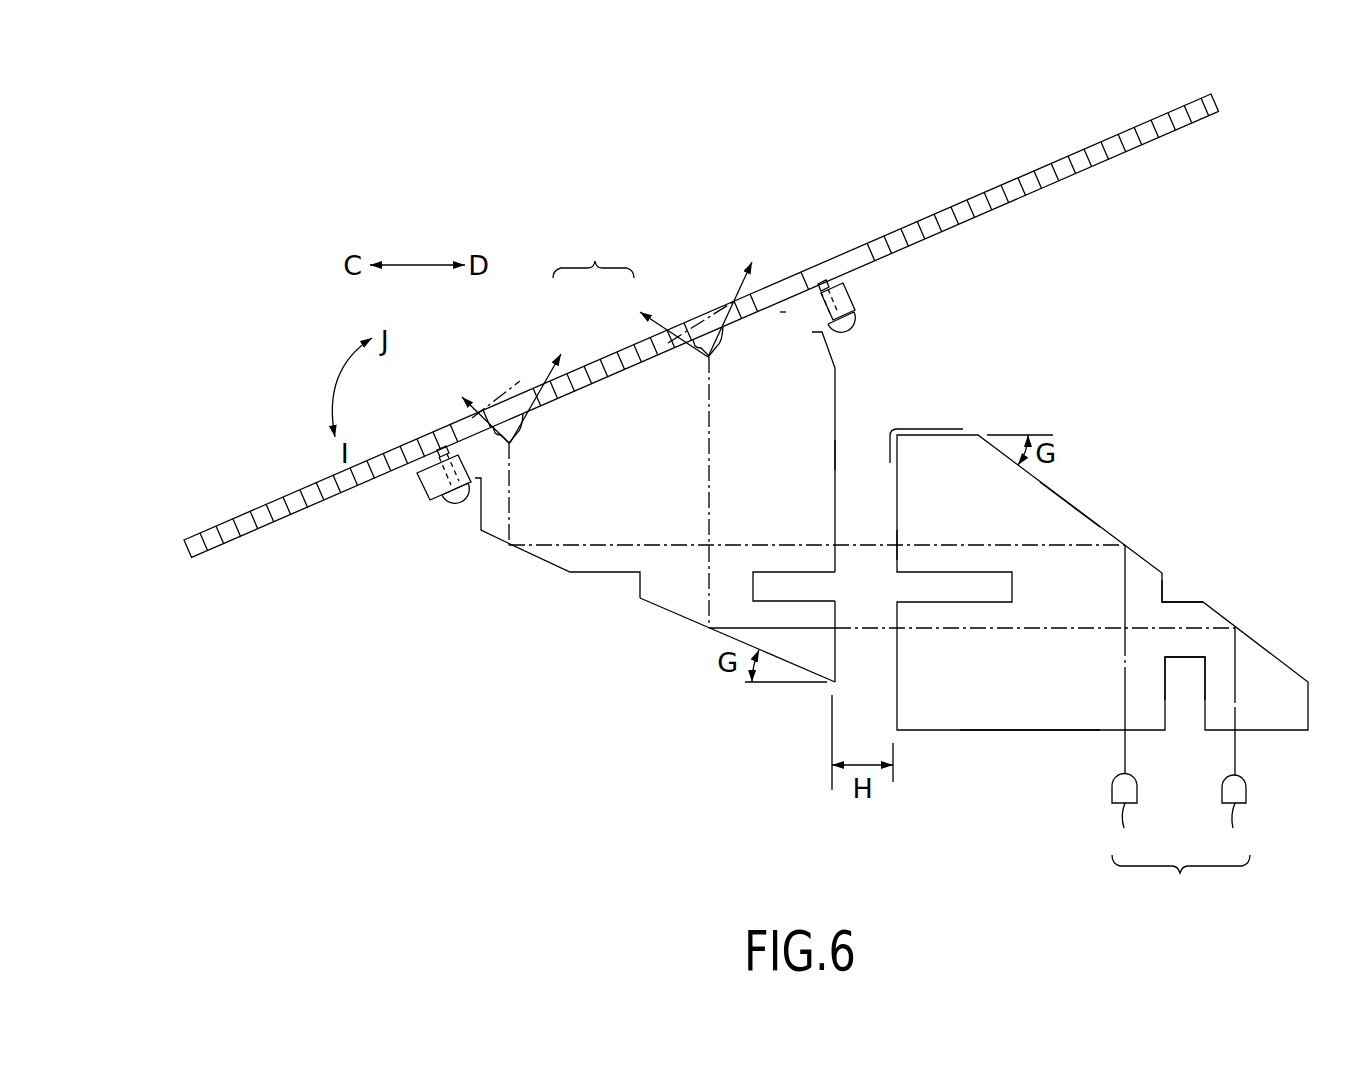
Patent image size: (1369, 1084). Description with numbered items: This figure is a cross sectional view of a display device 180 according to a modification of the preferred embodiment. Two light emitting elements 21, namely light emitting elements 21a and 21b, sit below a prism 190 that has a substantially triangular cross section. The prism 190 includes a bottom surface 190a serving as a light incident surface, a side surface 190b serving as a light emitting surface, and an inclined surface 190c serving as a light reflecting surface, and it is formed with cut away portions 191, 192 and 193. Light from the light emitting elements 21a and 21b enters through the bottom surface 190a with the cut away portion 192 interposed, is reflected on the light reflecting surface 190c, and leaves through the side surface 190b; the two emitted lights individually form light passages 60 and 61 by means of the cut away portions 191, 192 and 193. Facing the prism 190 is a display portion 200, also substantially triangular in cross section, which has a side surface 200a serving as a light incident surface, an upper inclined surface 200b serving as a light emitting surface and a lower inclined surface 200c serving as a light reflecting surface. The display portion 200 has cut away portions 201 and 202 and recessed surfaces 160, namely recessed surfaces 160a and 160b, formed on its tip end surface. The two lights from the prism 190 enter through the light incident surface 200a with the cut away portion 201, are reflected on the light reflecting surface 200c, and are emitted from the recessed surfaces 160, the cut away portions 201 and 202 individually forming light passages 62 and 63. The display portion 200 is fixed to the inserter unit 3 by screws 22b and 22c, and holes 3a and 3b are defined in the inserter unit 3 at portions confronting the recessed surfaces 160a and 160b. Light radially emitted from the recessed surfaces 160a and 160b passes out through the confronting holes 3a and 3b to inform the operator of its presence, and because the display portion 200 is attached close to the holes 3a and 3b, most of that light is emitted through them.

The inserter unit 3 is at (845, 252).
The hole 3a is at (503, 402).
The hole 3b is at (718, 308).
The light emitting elements 21 is at (1165, 908).
The light emitting element 21a is at (1125, 702).
The light emitting element 21b is at (1235, 743).
The screw 22b is at (448, 501).
The screw 22c is at (857, 318).
The light passage 60 is at (1055, 633).
The light passage 61 is at (922, 543).
The light passage 62 is at (718, 432).
The light passage 63 is at (657, 541).
The recessed surfaces 160 is at (574, 253).
The recessed surface 160a is at (511, 442).
The recessed surface 160b is at (708, 356).
The display device 180 is at (563, 616).
The prism 190 is at (1054, 486).
The bottom surface 190a is at (1015, 733).
The side surface 190b is at (952, 428).
The inclined surface 190c is at (1112, 525).
The cut away portion 191 is at (1180, 593).
The cut away portion 192 is at (1185, 723).
The cut away portion 193 is at (902, 592).
The display portion 200 is at (838, 386).
The side surface 200a is at (836, 460).
The upper inclined surface 200b is at (783, 312).
The lower inclined surface 200c is at (748, 690).
The cut away portion 201 is at (826, 586).
The cut away portion 202 is at (633, 581).